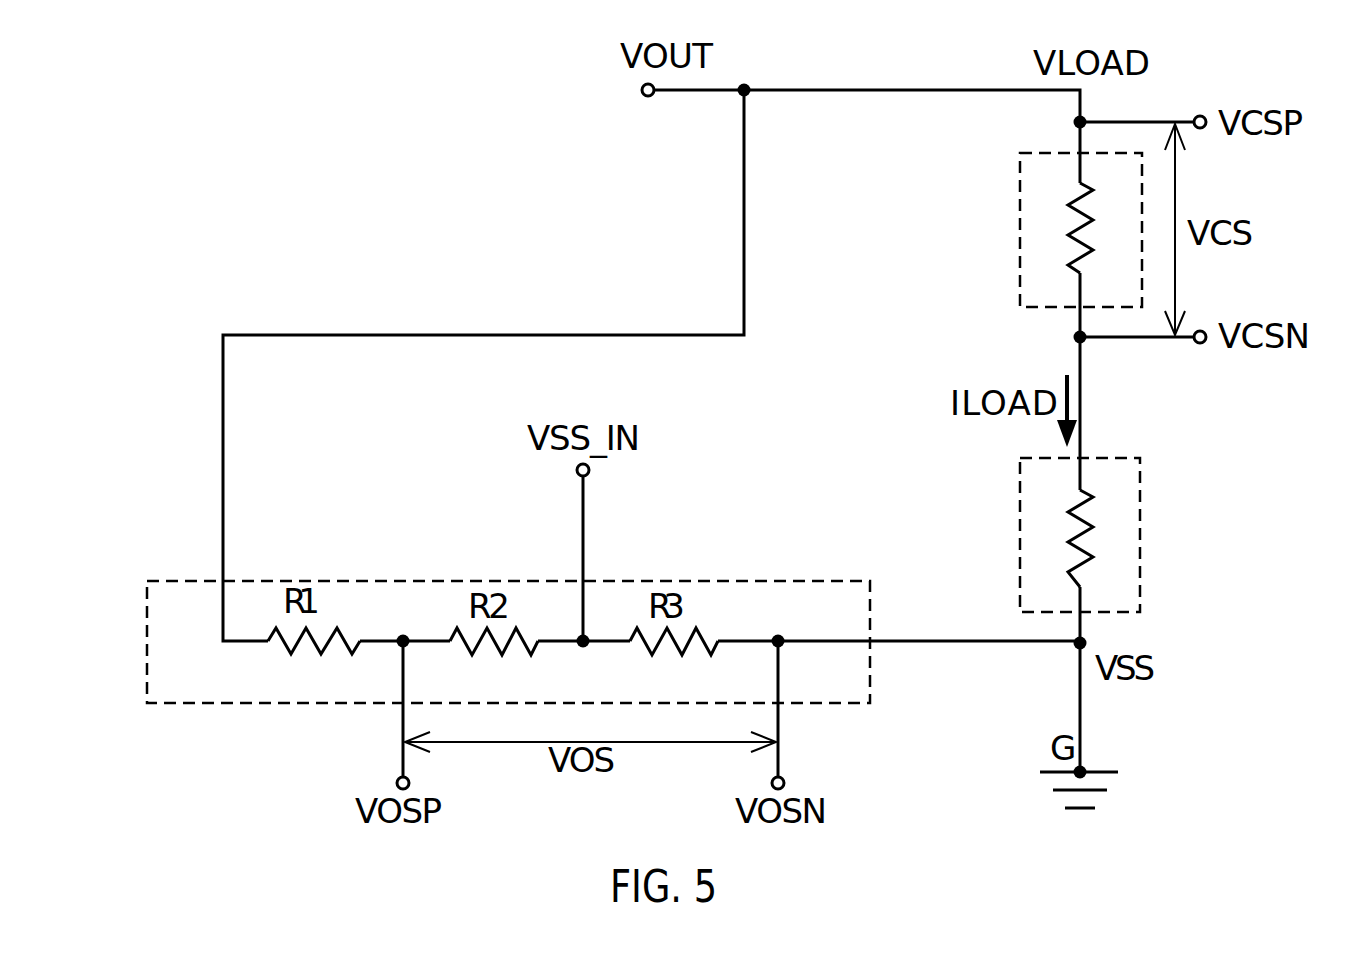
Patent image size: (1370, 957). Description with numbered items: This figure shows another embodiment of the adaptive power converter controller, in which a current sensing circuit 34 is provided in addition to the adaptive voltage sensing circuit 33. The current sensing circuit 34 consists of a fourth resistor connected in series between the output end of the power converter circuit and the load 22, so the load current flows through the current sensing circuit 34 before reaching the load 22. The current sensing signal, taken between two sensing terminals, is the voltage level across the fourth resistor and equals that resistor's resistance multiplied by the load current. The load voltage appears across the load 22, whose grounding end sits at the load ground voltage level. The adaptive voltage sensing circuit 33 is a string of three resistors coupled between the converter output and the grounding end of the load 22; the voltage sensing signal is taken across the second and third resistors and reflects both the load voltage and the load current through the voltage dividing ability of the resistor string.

The current sensing circuit 34 is at (1020, 195).
The load 22 is at (1120, 458).
The adaptive voltage sensing circuit 33 is at (849, 582).